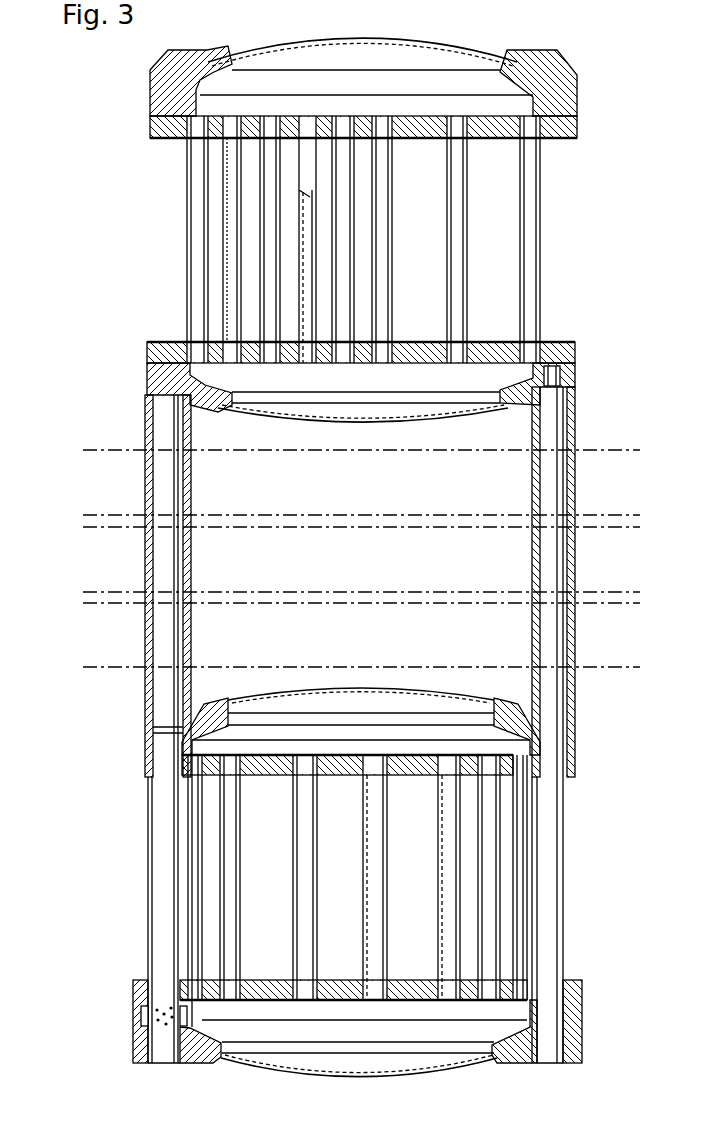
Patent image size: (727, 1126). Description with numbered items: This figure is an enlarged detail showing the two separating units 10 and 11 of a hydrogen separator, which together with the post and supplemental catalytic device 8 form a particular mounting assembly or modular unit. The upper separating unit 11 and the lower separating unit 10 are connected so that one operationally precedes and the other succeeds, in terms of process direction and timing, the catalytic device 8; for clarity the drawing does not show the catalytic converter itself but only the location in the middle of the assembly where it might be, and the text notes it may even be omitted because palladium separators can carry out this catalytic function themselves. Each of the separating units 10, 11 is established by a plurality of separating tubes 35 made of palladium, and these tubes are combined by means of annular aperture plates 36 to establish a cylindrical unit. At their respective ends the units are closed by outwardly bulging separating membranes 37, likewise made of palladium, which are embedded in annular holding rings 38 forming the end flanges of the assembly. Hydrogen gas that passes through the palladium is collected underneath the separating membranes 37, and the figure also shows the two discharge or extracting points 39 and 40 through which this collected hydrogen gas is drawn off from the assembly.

The post and supplemental catalytic device 8 is at (128, 566).
The separating unit 10 is at (138, 941).
The separating unit 11 is at (163, 192).
The separating tubes 35 is at (237, 248).
The annular aperture plates 36 is at (177, 135).
The separating membranes 37 is at (432, 47).
The annular holding rings 38 is at (592, 78).
The discharge or extracting point 39 is at (556, 380).
The discharge or extracting point 40 is at (140, 1014).